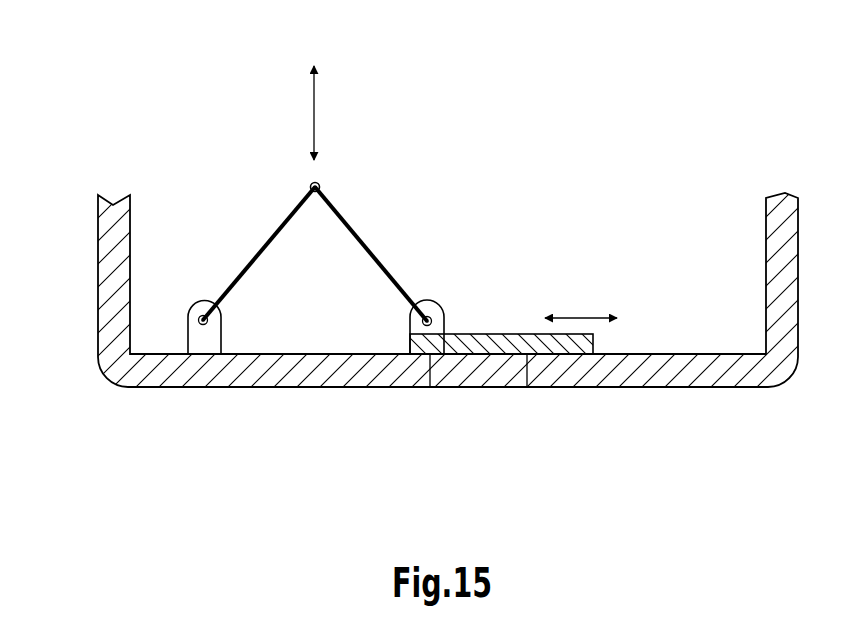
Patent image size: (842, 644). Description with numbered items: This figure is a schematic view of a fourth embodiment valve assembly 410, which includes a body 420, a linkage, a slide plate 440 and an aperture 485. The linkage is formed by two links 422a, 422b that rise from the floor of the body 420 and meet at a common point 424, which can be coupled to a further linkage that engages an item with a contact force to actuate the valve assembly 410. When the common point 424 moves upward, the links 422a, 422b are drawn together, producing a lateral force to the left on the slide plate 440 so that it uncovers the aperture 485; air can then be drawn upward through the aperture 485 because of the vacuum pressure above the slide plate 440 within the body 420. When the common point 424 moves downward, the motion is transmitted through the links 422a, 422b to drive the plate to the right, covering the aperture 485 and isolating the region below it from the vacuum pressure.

The valve assembly 410 is at (711, 59).
The body 420 is at (255, 370).
The link 422a is at (255, 255).
The link 422b is at (362, 240).
The common point 424 is at (318, 184).
The slide plate 440 is at (496, 340).
The aperture 485 is at (483, 375).